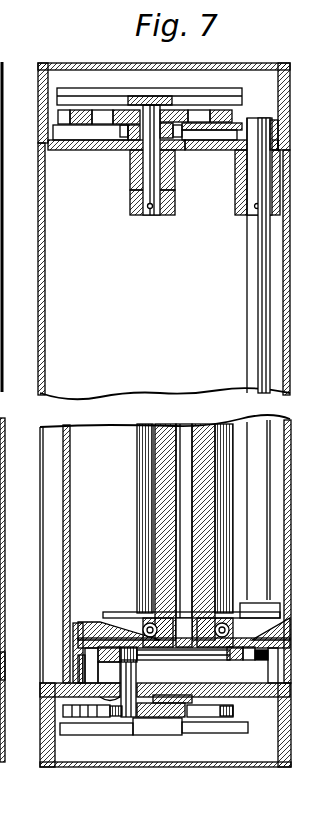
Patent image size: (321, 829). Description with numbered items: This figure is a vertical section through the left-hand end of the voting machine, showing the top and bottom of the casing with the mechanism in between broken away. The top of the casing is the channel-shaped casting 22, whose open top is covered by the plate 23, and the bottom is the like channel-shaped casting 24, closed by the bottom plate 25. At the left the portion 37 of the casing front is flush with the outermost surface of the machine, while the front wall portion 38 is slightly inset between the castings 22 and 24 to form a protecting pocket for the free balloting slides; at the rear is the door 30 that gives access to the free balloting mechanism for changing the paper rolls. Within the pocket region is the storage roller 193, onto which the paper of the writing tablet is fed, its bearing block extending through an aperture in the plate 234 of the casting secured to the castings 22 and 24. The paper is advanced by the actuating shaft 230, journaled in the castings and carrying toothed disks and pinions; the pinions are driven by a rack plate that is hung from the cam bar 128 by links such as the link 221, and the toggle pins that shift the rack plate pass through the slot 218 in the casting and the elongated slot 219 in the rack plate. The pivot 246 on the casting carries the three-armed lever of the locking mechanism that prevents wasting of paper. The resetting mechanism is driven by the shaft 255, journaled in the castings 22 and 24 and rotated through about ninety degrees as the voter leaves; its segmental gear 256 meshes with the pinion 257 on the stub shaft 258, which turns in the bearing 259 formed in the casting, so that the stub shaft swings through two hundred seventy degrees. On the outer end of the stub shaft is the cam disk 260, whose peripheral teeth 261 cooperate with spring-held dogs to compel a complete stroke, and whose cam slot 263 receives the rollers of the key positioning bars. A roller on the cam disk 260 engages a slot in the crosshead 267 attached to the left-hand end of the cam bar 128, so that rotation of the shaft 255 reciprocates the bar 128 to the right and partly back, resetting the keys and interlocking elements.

The channel-shaped casting 22 is at (60, 150).
The plate 23 is at (90, 67).
The channel-shaped casting 24 is at (251, 686).
The bottom plate 25 is at (176, 767).
The door 30 is at (289, 308).
The portion of casing 37 is at (40, 320).
The front wall portion 38 is at (70, 498).
The cam bar 128 is at (176, 88).
The storage roller 193 is at (143, 535).
The slot 218 is at (0, 667).
The elongated slot 219 is at (258, 662).
The link 221 is at (137, 667).
The actuating shaft 230 is at (196, 652).
The plate 234 is at (128, 640).
The pivot 246 is at (0, 99).
The shaft 255 is at (250, 292).
The segmental gear 256 is at (200, 148).
The pinion 257 is at (115, 150).
The stub shaft 258 is at (132, 197).
The bearing 259 is at (172, 168).
The cam disk 260 is at (229, 110).
The teeth 261 is at (62, 110).
The cam slot 263 is at (199, 110).
The crosshead 267 is at (120, 88).